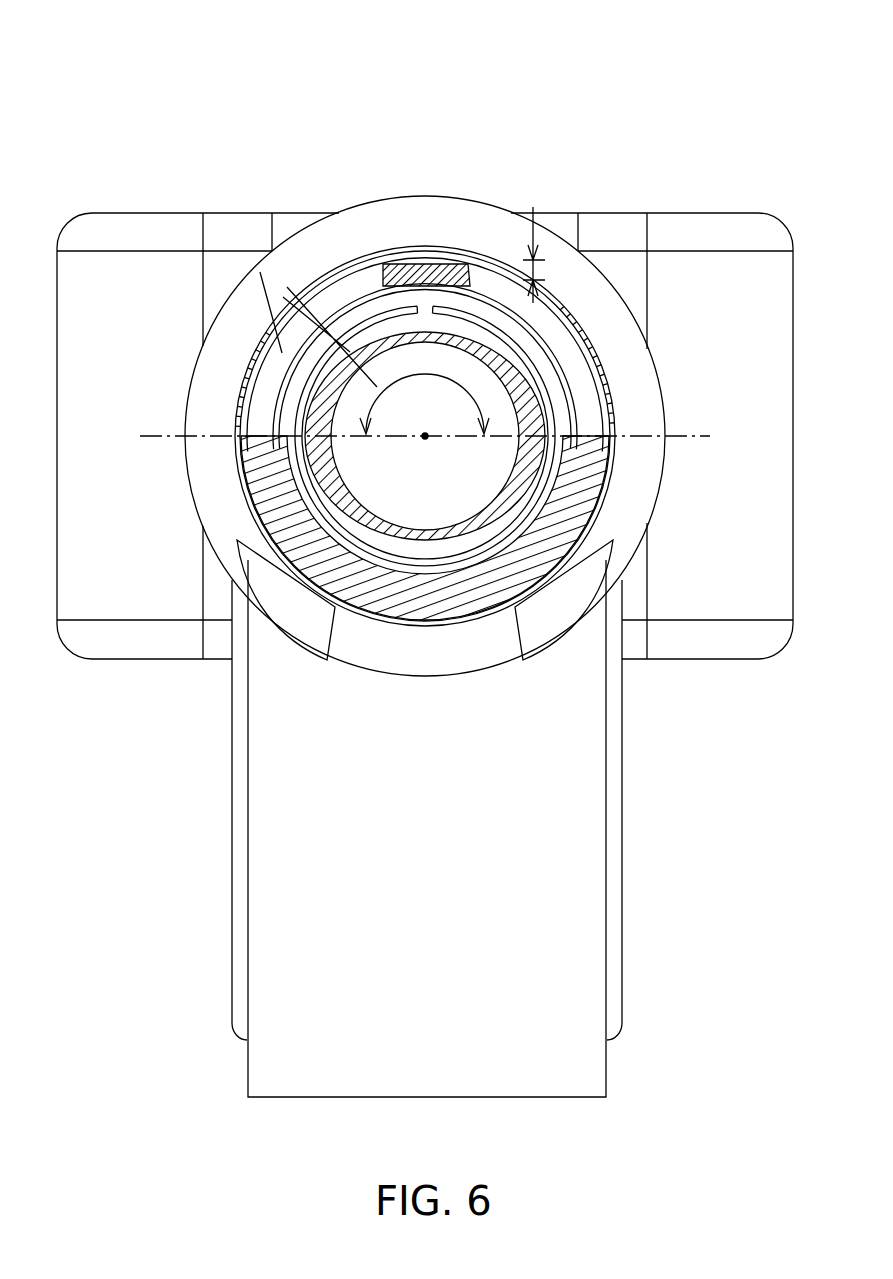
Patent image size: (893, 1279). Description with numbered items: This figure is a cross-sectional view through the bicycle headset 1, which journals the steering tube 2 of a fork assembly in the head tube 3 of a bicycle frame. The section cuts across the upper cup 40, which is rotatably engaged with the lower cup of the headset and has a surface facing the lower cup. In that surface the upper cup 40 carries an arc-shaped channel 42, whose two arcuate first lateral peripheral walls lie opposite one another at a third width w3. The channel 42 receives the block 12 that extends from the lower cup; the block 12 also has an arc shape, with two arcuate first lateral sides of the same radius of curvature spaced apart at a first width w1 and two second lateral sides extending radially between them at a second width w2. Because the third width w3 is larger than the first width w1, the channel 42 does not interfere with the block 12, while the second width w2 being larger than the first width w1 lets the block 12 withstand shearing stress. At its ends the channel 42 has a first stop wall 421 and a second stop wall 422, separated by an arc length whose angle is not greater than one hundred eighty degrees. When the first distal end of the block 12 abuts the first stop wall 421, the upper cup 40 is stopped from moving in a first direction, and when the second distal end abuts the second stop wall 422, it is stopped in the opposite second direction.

The bicycle headset 1 is at (308, 95).
The steering tube 2 is at (235, 560).
The head tube 3 is at (484, 233).
The block 12 is at (395, 265).
The upper cup 40 is at (555, 517).
The channel 42 is at (250, 436).
The first stop wall 421 is at (603, 395).
The second stop wall 422 is at (250, 400).
The first width w1 is at (545, 268).
The second width w2 is at (423, 264).
The third width w3 is at (300, 340).